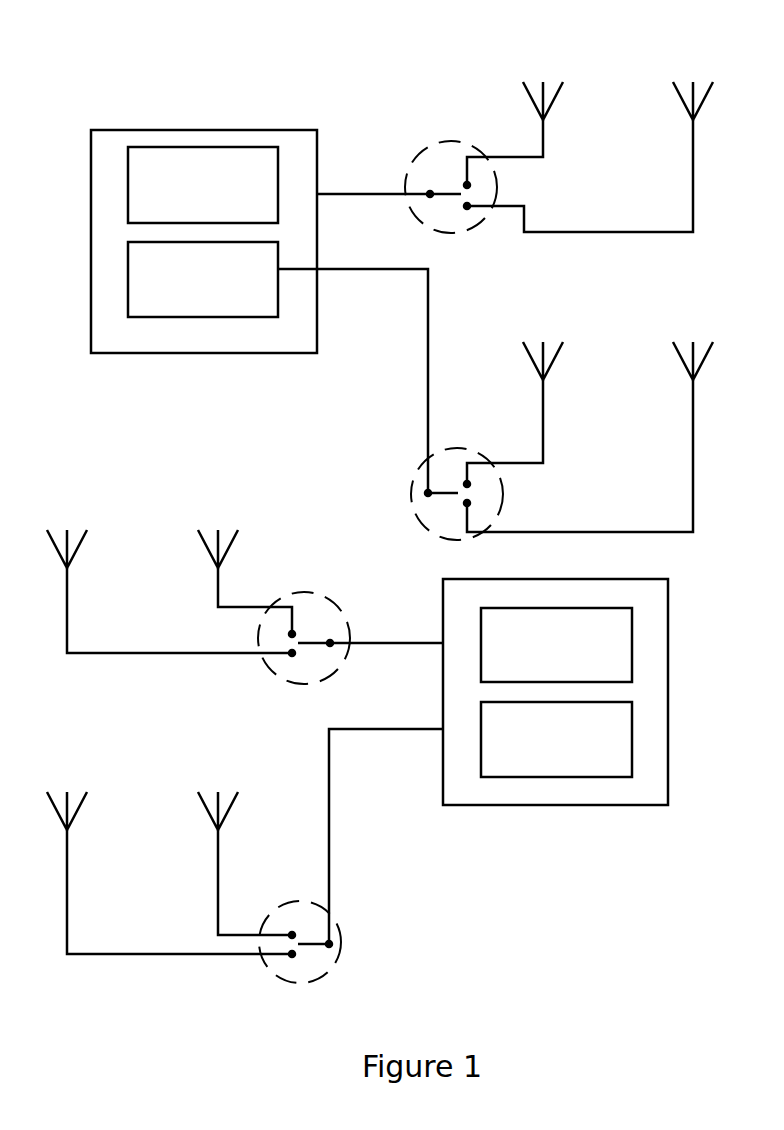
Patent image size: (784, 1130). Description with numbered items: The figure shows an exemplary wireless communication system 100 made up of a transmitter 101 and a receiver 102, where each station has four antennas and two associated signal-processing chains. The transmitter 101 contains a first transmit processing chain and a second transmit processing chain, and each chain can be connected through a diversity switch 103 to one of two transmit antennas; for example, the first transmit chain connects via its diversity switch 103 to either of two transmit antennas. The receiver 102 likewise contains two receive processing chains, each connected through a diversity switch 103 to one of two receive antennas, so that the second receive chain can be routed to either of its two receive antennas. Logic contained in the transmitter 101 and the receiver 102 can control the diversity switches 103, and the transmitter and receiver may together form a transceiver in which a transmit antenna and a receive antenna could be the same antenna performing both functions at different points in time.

The wireless communication system 100 is at (374, 27).
The transmitter 101 is at (241, 130).
The receiver 102 is at (633, 805).
The diversity switch 103 is at (381, 555).